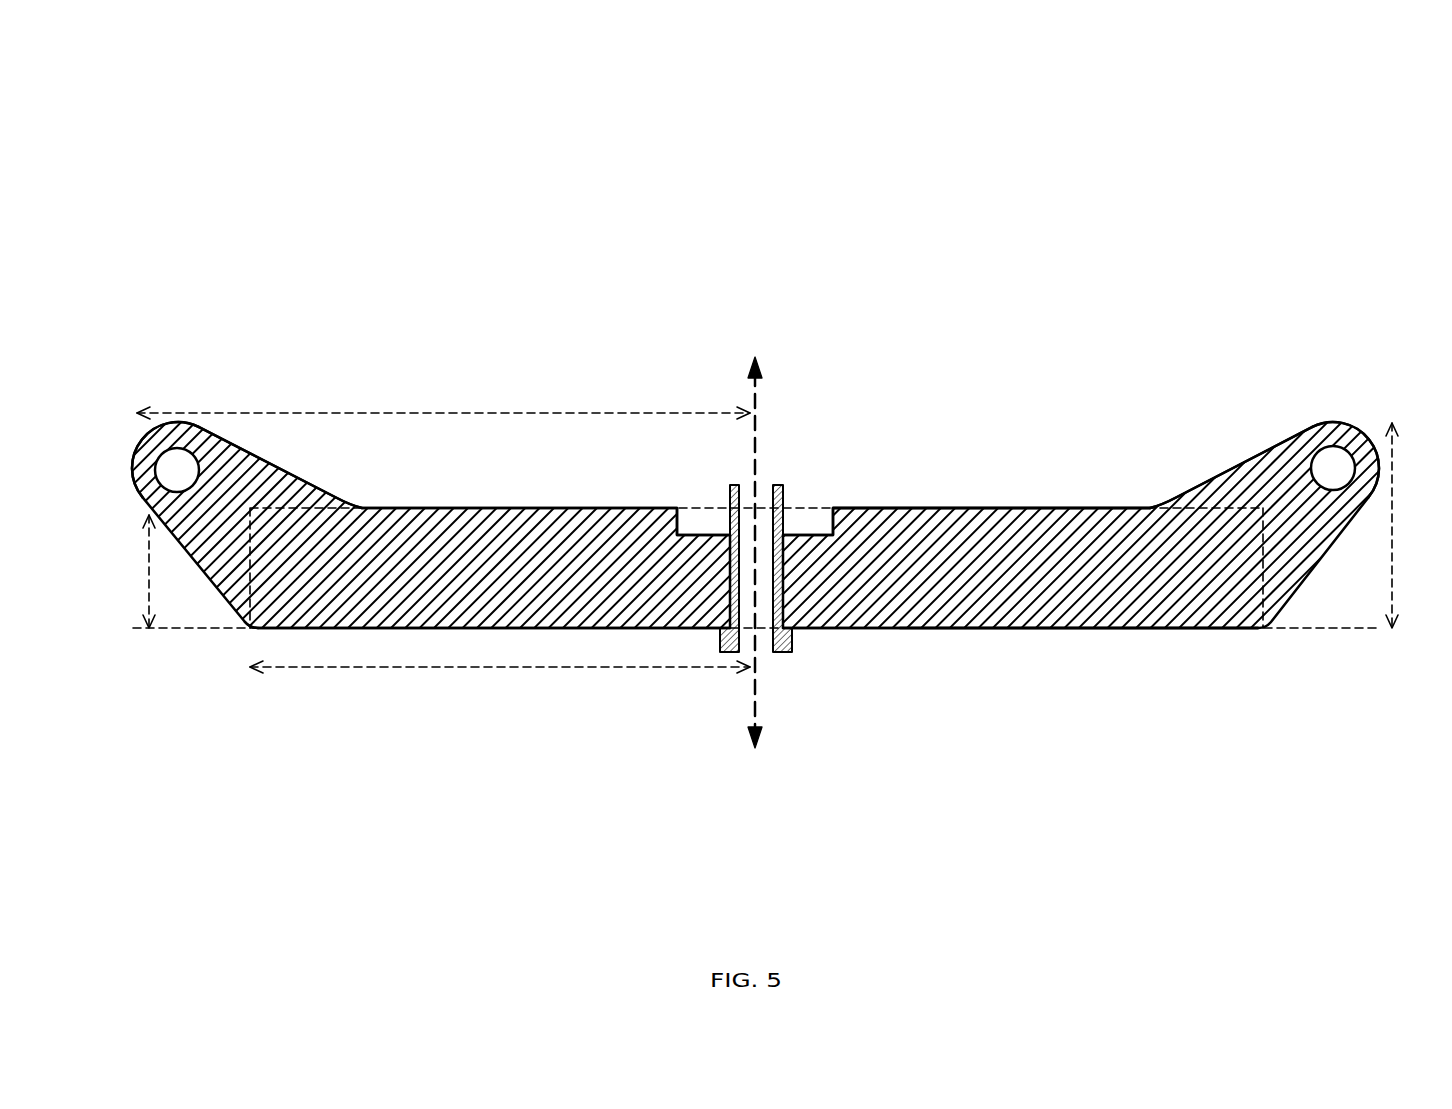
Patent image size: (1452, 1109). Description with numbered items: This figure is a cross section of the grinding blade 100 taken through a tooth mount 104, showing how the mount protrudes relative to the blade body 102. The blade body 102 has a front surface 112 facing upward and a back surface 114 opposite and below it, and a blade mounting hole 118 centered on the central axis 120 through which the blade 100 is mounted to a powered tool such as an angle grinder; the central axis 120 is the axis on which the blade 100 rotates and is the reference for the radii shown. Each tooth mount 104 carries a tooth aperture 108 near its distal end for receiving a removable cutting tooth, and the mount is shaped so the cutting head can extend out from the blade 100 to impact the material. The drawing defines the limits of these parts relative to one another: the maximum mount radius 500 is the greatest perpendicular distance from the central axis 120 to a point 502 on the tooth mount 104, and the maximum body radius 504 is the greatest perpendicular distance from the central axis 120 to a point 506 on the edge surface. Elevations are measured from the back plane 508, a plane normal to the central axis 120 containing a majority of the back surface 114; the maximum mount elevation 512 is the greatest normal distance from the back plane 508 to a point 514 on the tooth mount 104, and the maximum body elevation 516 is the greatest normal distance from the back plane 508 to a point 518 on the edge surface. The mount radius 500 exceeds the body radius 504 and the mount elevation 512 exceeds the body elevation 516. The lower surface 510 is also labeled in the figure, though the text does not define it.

The grinding blade 100 is at (1255, 176).
The blade body 102 is at (801, 508).
The tooth mount 104 is at (1285, 463).
The tooth aperture 108 is at (196, 456).
The front surface 112 is at (1036, 478).
The back surface 114 is at (934, 660).
The blade mounting hole 118 is at (771, 485).
The central axis 120 is at (755, 712).
The maximum mount radius 500 is at (660, 412).
The point on tooth mount 502 is at (133, 481).
The maximum body radius 504 is at (421, 670).
The point on edge surface 506 is at (249, 632).
The back plane 508 is at (1305, 630).
The bottom surface 510 is at (1107, 630).
The maximum mount elevation 512 is at (1392, 575).
The point on tooth mount 514 is at (1337, 417).
The maximum body elevation 516 is at (172, 632).
The point on edge surface 518 is at (451, 508).